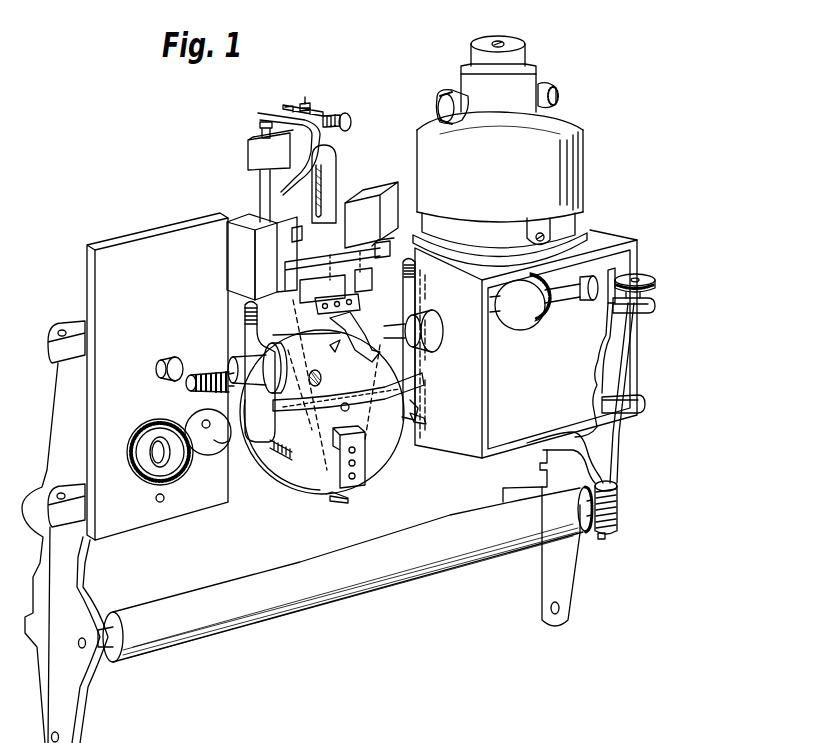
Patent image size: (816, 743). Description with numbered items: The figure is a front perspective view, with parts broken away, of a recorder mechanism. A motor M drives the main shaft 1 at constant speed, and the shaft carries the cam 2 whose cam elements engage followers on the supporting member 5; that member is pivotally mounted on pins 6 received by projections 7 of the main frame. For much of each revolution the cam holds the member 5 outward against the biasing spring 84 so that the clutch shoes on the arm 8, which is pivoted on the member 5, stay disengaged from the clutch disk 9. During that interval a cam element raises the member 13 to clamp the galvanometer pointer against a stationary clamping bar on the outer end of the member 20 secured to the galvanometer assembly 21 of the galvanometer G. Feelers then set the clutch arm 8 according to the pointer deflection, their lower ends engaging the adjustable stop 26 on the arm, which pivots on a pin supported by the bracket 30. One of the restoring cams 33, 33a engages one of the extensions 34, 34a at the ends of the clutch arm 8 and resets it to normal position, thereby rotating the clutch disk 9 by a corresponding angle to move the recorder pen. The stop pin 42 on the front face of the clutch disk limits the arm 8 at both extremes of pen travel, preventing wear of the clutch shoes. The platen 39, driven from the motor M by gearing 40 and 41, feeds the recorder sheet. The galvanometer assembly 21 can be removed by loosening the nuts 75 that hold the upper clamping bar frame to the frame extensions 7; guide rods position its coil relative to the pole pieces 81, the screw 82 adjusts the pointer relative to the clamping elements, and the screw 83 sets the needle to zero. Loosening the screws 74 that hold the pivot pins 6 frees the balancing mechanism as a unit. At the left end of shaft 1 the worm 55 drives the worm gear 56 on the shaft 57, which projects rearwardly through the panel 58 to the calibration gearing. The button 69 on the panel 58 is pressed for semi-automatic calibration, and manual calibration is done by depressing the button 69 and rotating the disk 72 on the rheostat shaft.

The main shaft 1 is at (228, 379).
The cam 2 is at (368, 350).
The supporting member 5 is at (350, 498).
The pins 6 is at (292, 290).
The projections 7 is at (255, 288).
The clutch arm 8 is at (420, 386).
The clutch disk 9 is at (296, 485).
The member 13 is at (368, 305).
The member 20 is at (323, 173).
The galvanometer assembly 21 is at (322, 140).
The pin or stop 26 is at (352, 412).
The bracket 30 is at (368, 462).
The restoring cam 33 is at (262, 436).
The restoring cam 33a is at (418, 390).
The extension 34 is at (292, 458).
The extension 34a is at (426, 420).
The platen 39 is at (360, 530).
The gearing 40 is at (620, 512).
The gearing 41 is at (656, 282).
The stop pin 42 is at (307, 388).
The worm 55 is at (190, 389).
The worm gear 56 is at (208, 436).
The shaft 57 is at (222, 446).
The panel 58 is at (100, 287).
The button 69 is at (177, 356).
The disk 72 is at (146, 476).
The screws 74 is at (412, 284).
The nuts 75 is at (296, 262).
The pole pieces 81 is at (262, 210).
The screw 82 is at (256, 130).
The screw 83 is at (352, 121).
The biasing spring 84 is at (340, 505).
The galvanometer G is at (312, 100).
The motor M is at (584, 182).